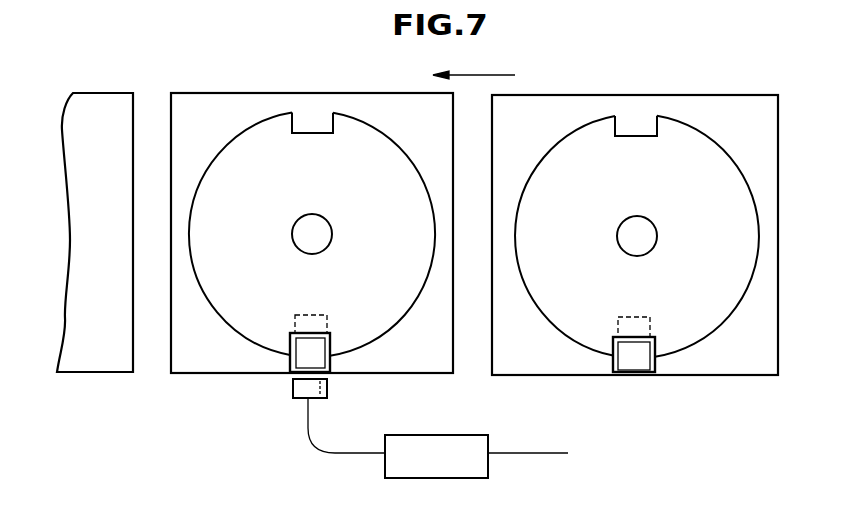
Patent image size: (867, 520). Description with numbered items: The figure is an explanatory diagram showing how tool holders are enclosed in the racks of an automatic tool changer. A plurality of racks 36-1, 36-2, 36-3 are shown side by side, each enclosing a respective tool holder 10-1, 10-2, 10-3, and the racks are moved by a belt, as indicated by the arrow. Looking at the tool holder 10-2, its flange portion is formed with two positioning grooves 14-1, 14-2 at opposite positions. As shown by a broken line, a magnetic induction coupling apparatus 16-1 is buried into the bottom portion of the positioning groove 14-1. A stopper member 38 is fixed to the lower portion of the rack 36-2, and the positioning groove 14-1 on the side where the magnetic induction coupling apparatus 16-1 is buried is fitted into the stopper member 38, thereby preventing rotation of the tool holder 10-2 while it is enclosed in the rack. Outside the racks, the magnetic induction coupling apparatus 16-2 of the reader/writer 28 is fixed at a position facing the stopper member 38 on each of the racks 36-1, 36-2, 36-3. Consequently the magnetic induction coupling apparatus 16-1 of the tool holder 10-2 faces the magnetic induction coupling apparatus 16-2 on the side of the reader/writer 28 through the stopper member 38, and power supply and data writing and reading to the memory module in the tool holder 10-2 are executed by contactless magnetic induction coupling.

The tool holder 10-1 is at (105, 93).
The tool holder 10-2 is at (353, 127).
The tool holder 10-3 is at (692, 132).
The positioning groove 14-1 is at (333, 352).
The positioning groove 14-2 is at (295, 122).
The magnetic induction coupling apparatus 16-1 is at (293, 327).
The magnetic induction coupling apparatus 16-2 is at (305, 398).
The reader/writer 28 is at (473, 438).
The rack 36-1 is at (85, 372).
The rack 36-2 is at (193, 373).
The rack 36-3 is at (718, 375).
The stopper member 38 is at (300, 357).